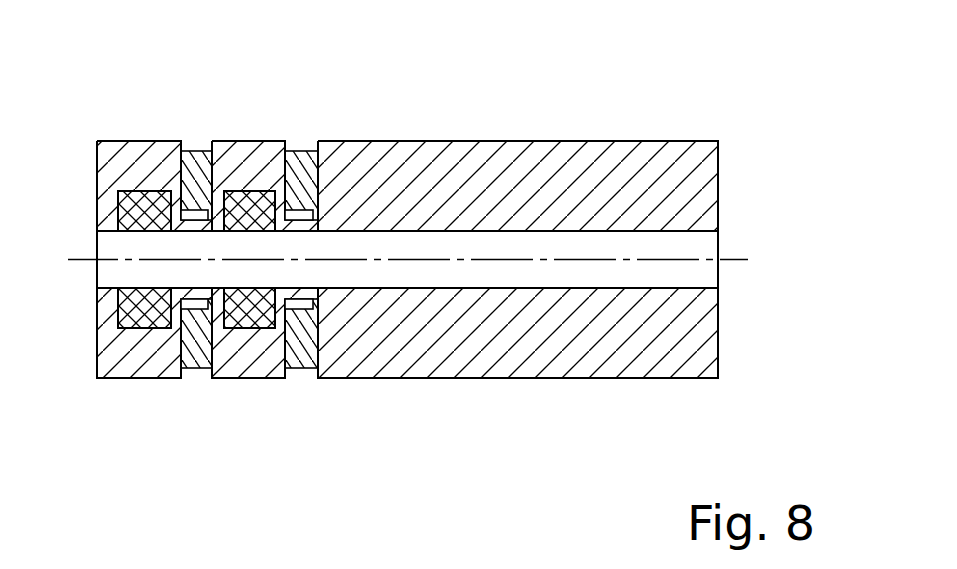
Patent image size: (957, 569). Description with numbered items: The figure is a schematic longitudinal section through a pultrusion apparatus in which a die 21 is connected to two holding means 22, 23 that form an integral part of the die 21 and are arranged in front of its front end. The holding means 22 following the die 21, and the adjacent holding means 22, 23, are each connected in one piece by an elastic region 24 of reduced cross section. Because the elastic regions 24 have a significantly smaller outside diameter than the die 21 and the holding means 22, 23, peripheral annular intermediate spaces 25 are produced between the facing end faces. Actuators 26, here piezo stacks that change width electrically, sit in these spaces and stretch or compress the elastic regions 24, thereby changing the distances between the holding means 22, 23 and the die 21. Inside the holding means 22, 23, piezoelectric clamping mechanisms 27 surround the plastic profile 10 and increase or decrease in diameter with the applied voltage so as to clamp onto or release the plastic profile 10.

The plastic profile 10 is at (530, 248).
The die 21 is at (432, 358).
The holding means 22 is at (263, 360).
The holding means 23 is at (132, 355).
The elastic region 24 is at (208, 221).
The intermediate space 25 is at (196, 131).
The actuator 26 is at (193, 348).
The clamping mechanism 27 is at (240, 207).